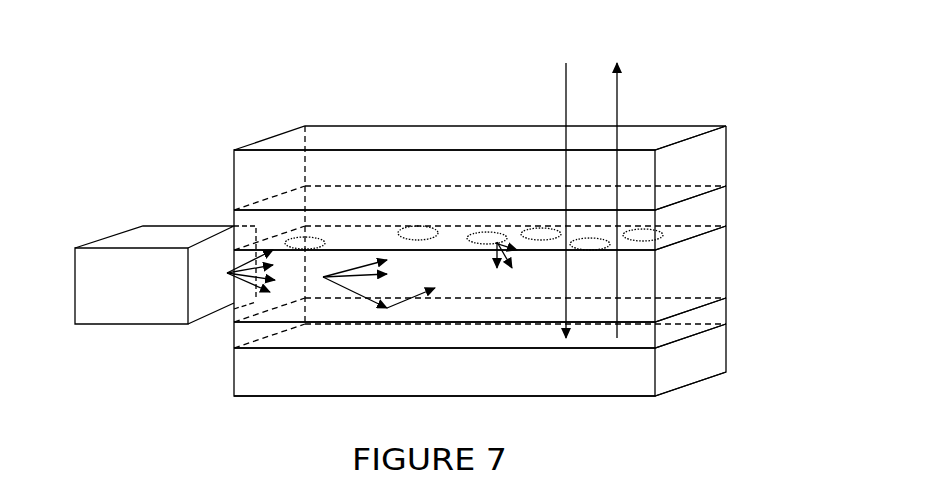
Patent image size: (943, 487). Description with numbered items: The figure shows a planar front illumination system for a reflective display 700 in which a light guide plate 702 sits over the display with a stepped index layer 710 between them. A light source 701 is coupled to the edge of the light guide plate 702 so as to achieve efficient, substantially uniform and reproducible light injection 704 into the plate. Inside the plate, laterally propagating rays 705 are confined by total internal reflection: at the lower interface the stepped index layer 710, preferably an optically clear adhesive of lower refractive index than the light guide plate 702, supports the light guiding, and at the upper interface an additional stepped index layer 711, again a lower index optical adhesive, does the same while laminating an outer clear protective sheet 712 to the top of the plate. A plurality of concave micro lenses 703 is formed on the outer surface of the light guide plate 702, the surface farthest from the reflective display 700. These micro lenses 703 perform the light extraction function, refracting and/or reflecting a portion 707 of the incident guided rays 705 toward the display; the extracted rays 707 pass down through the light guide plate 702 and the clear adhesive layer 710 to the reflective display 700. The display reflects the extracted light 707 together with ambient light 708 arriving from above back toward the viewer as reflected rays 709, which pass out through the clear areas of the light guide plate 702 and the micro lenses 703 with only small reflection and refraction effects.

The reflective display 700 is at (708, 363).
The light source 701 is at (137, 235).
The light guide plate 702 is at (712, 268).
The concave micro lenses 703 is at (418, 228).
The light injection 704 is at (240, 288).
The laterally propagating rays 705 is at (353, 257).
The extracted rays 707 is at (509, 235).
The ambient light 708 is at (562, 73).
The reflected rays 709 is at (622, 92).
The stepped index layer 710 is at (708, 318).
The additional stepped index layer 711 is at (708, 210).
The outer clear protective sheet 712 is at (703, 150).